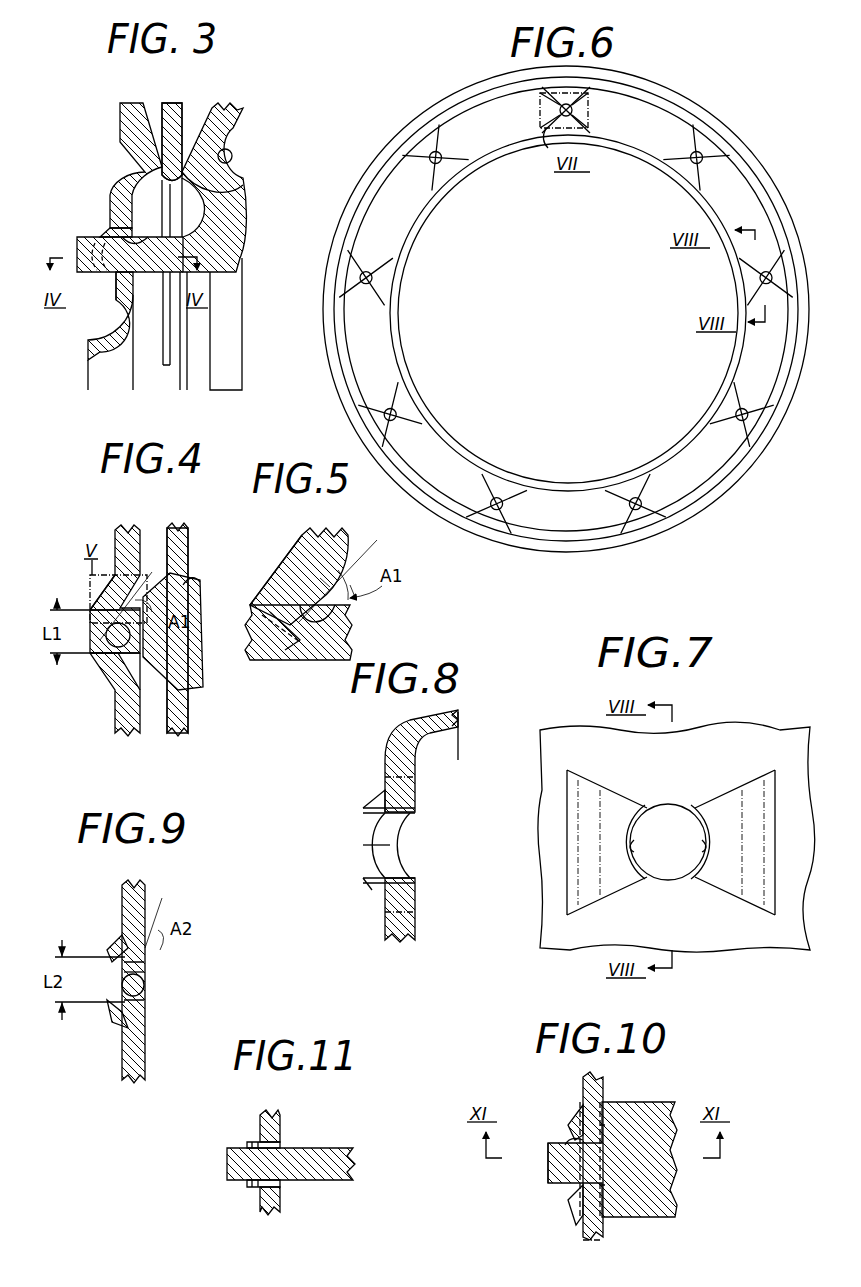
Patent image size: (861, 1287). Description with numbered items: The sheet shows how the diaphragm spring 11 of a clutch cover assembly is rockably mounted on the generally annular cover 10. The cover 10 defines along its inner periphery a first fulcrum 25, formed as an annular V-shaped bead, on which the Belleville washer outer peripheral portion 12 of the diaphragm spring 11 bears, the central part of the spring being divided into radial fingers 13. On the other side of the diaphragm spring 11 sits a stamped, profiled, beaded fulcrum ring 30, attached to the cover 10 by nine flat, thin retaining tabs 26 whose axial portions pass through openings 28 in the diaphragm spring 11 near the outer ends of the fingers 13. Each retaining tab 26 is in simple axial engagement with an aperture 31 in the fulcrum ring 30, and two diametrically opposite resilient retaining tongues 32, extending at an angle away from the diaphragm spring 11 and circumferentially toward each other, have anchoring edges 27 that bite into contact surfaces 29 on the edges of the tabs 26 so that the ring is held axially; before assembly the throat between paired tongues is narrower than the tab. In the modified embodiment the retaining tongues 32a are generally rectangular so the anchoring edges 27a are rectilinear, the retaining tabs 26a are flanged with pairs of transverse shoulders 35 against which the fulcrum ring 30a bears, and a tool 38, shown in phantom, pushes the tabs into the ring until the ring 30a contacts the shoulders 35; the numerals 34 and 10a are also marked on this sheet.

In FIG. 3, the cover 10 is at (243, 106).
In FIG. 4, the cover 10 is at (206, 680).
In FIG. 3, the diaphragm spring 11 is at (169, 102).
In FIG. 4, the diaphragm spring 11 is at (173, 528).
In FIG. 3, the Belleville washer outer peripheral portion 12 is at (176, 125).
In FIG. 4, the Belleville washer outer peripheral portion 12 is at (185, 538).
In FIG. 3, the radial fingers 13 is at (170, 370).
In FIG. 3, the first fulcrum 25 is at (226, 148).
In FIG. 3, the retaining tabs 26 is at (157, 262).
In FIG. 4, the retaining tabs 26 is at (153, 665).
In FIG. 5, the retaining tabs 26 is at (285, 655).
In FIG. 3, the anchoring edges 27 is at (108, 278).
In FIG. 4, the anchoring edges 27 is at (131, 636).
In FIG. 5, the anchoring edges 27 is at (345, 625).
In FIG. 8, the anchoring edges 27 is at (388, 845).
In FIG. 7, the anchoring edges 27 is at (630, 856).
In FIG. 9, the anchoring edges 27 is at (140, 957).
In FIG. 3, the openings 28 is at (215, 192).
In FIG. 4, the openings 28 is at (194, 580).
In FIG. 3, the contact surfaces 29 is at (90, 236).
In FIG. 4, the contact surfaces 29 is at (98, 610).
In FIG. 5, the contact surfaces 29 is at (303, 650).
In FIG. 3, the fulcrum ring 30 is at (113, 112).
In FIG. 6, the fulcrum ring 30 is at (782, 178).
In FIG. 4, the fulcrum ring 30 is at (110, 528).
In FIG. 5, the fulcrum ring 30 is at (298, 545).
In FIG. 8, the fulcrum ring 30 is at (348, 855).
In FIG. 7, the fulcrum ring 30 is at (780, 728).
In FIG. 9, the fulcrum ring 30 is at (128, 1084).
In FIG. 3, the apertures 31 is at (142, 232).
In FIG. 6, the apertures 31 is at (431, 152).
In FIG. 8, the apertures 31 is at (358, 812).
In FIG. 7, the apertures 31 is at (640, 830).
In FIG. 9, the apertures 31 is at (143, 980).
In FIG. 3, the retaining tongues 32 is at (106, 226).
In FIG. 6, the retaining tongues 32 is at (448, 166).
In FIG. 4, the retaining tongues 32 is at (100, 598).
In FIG. 5, the retaining tongues 32 is at (292, 582).
In FIG. 8, the retaining tongues 32 is at (372, 884).
In FIG. 7, the retaining tongues 32 is at (592, 838).
In FIG. 9, the retaining tongues 32 is at (115, 945).
In FIG. 9, the contact surface 34 is at (142, 972).
In FIG. 10, the transverse shoulders 35 is at (601, 1126).
In FIG. 10, the tool 38 is at (585, 1242).
In FIG. 11, the housing plate 10a is at (318, 1185).
In FIG. 10, the housing plate 10a is at (677, 1190).
In FIG. 11, the retaining tabs 26a is at (230, 1165).
In FIG. 10, the retaining tabs 26a is at (558, 1163).
In FIG. 11, the anchoring edges 27a is at (255, 1188).
In FIG. 10, the anchoring edges 27a is at (568, 1138).
In FIG. 11, the fulcrum ring 30a is at (256, 1128).
In FIG. 10, the fulcrum ring 30a is at (608, 1088).
In FIG. 10, the retaining tongues 32a is at (577, 1115).